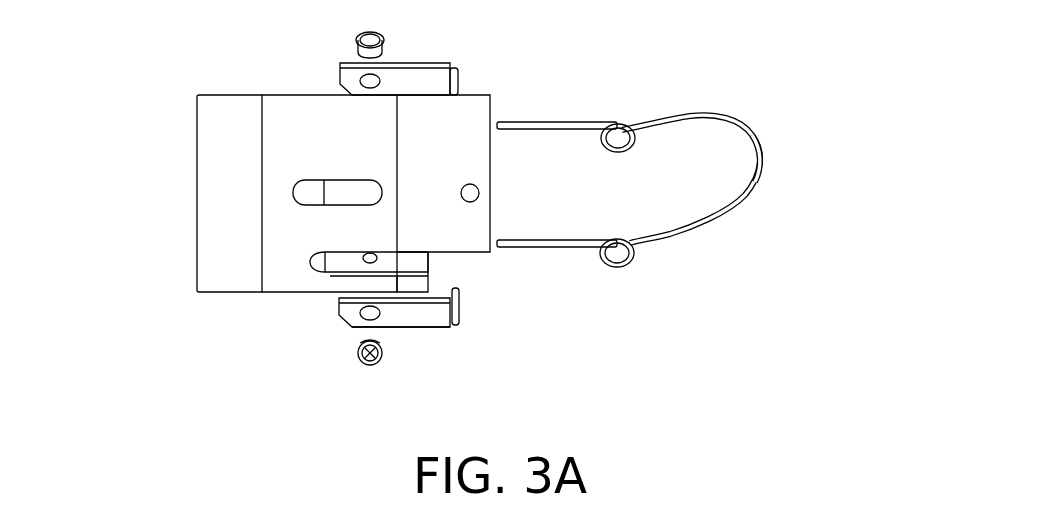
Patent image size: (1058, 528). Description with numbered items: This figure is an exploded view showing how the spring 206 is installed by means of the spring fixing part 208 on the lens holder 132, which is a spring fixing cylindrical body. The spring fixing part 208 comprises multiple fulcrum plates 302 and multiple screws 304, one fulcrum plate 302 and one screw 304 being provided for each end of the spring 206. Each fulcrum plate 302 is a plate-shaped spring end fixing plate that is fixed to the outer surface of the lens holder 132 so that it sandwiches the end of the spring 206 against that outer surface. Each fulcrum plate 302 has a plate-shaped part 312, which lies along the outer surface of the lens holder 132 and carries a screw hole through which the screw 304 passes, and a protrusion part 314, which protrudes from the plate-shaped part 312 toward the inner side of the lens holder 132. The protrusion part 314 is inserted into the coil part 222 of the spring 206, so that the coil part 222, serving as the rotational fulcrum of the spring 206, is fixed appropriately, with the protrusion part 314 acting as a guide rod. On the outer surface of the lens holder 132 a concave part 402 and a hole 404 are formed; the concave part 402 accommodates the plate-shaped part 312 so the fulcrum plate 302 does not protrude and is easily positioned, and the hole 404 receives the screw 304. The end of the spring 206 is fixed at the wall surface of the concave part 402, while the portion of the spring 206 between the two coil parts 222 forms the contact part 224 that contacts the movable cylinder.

The lens holder 132 is at (250, 287).
The spring 206 is at (730, 212).
The spring fixing part 208 is at (483, 69).
The coil part 222 is at (620, 153).
The contact part 224 is at (757, 143).
The fulcrum plate 302 is at (347, 78).
The screw 304 is at (357, 36).
The plate-shaped part 312 is at (433, 322).
The protrusion part 314 is at (460, 295).
The concave part 402 is at (422, 262).
The hole 404 is at (363, 258).